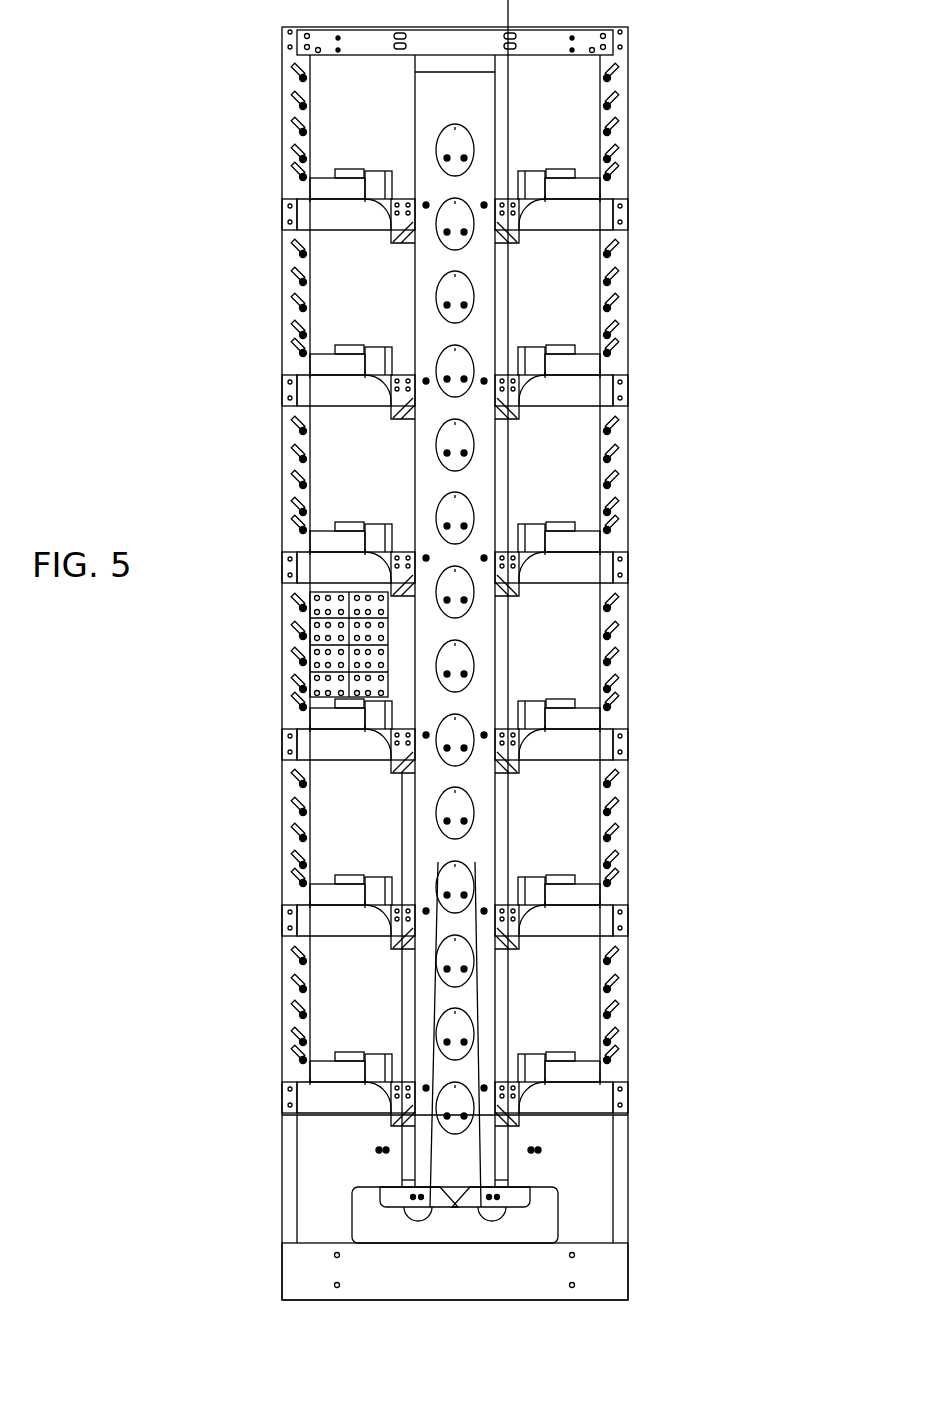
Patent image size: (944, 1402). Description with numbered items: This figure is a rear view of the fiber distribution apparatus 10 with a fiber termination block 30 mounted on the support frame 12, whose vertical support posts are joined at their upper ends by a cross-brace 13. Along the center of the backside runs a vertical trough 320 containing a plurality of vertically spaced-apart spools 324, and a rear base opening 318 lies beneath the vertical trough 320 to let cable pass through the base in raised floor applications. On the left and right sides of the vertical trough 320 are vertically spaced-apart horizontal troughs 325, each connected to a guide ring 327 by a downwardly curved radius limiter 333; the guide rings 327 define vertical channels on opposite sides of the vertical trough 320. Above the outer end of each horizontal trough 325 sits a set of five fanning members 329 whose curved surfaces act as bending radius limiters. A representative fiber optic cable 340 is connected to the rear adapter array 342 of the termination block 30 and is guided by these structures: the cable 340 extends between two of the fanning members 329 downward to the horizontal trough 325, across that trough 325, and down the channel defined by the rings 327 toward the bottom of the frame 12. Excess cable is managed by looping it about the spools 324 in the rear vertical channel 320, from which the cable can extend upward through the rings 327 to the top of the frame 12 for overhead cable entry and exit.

The fiber distribution apparatus 10 is at (700, 201).
The support frame 12 is at (629, 138).
The cross-brace 13 is at (587, 40).
The fiber termination block 30 is at (395, 638).
The rear base opening 318 is at (497, 1302).
The vertical trough 320 is at (497, 313).
The spools 324 is at (463, 438).
The horizontal troughs 325 is at (328, 727).
The guide rings 327 is at (520, 765).
The fanning members 329 is at (620, 480).
The radius limiter 333 is at (528, 735).
The fiber optic cable 340 is at (402, 838).
The rear adapter array 342 is at (388, 605).